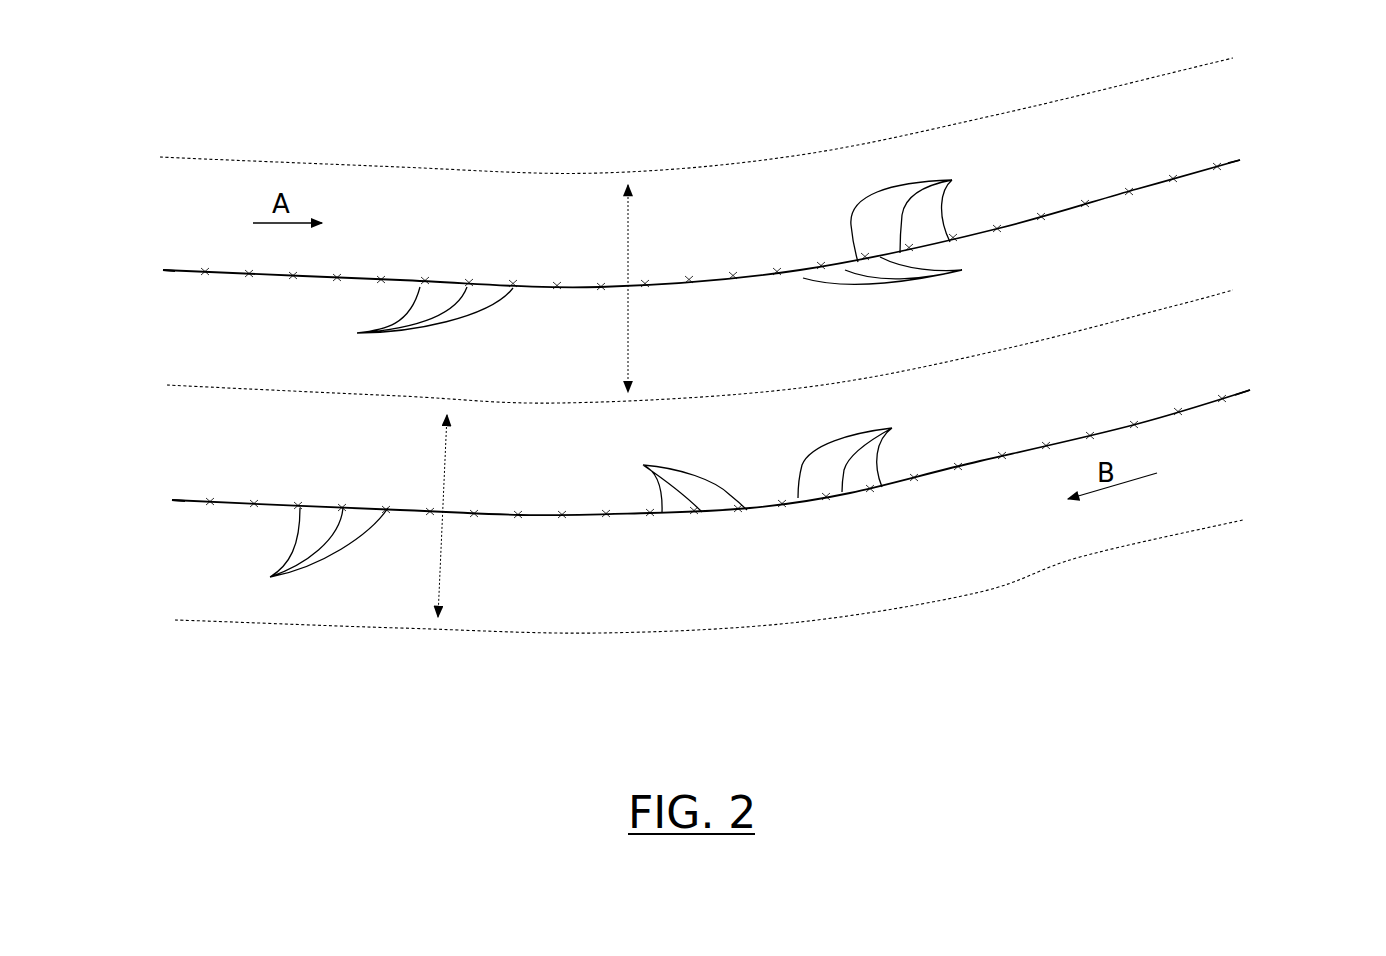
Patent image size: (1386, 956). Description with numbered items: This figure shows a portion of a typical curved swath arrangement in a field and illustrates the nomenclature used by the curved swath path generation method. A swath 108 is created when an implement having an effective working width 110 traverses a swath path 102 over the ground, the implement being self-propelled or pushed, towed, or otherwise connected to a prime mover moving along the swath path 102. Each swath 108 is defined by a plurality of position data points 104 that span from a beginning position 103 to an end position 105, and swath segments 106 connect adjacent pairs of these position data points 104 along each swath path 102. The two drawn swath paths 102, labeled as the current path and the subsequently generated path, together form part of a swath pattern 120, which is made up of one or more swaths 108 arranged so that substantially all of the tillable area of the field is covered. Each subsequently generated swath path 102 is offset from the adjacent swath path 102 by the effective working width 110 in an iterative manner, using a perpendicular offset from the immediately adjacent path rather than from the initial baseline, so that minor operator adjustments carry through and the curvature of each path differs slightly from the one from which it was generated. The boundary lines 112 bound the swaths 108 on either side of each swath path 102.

The swath path 102 is at (230, 296).
The beginning position 103 is at (172, 267).
The position data points 104 is at (614, 425).
The end position 105 is at (1237, 156).
The swath segments 106 is at (799, 340).
The swath 108 is at (438, 150).
The effective working width 110 is at (630, 250).
The passage wall (endwall) 112 is at (1005, 117).
The swath pattern 120 is at (370, 745).